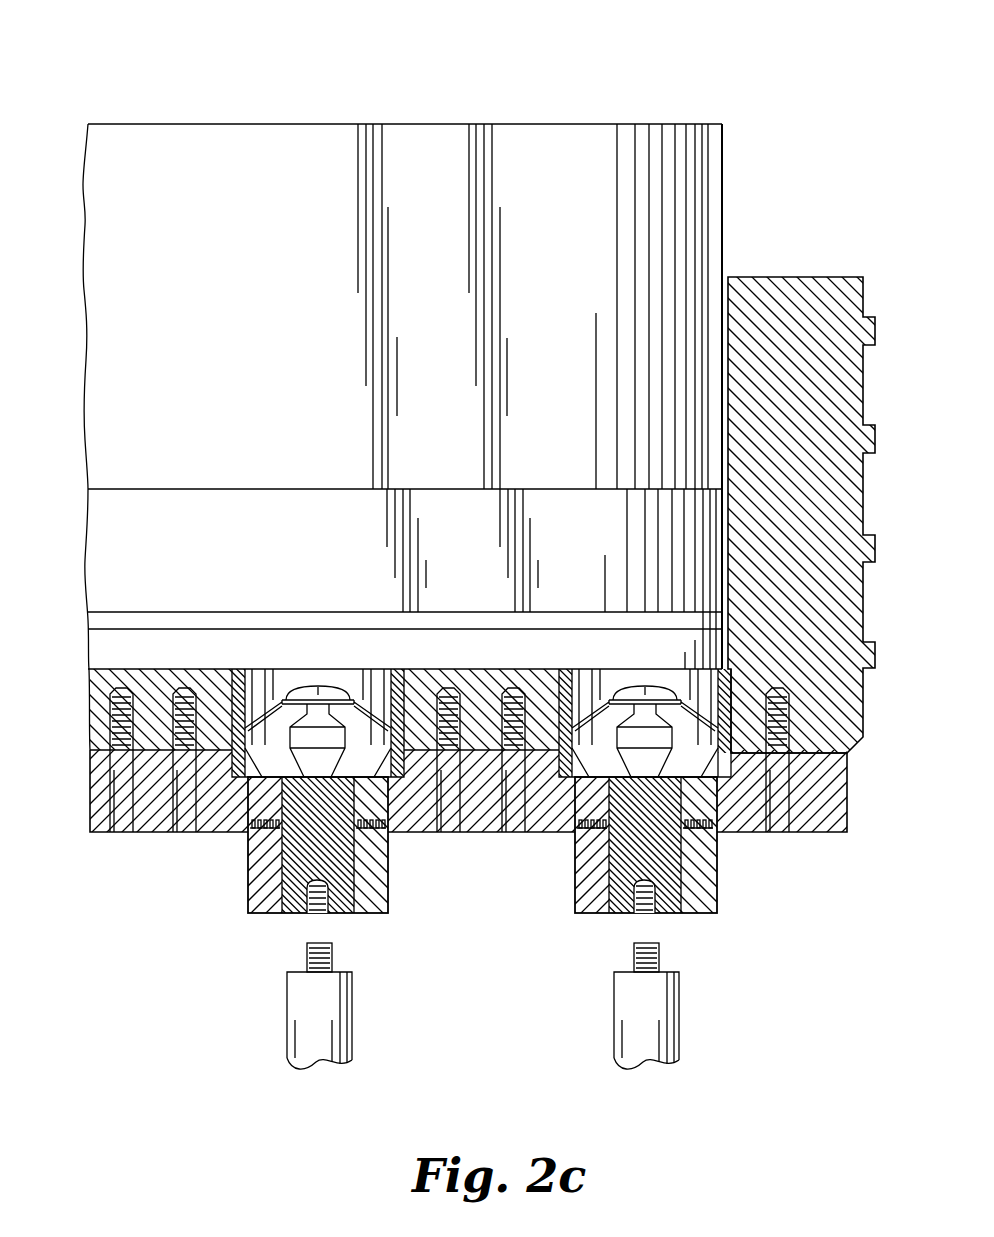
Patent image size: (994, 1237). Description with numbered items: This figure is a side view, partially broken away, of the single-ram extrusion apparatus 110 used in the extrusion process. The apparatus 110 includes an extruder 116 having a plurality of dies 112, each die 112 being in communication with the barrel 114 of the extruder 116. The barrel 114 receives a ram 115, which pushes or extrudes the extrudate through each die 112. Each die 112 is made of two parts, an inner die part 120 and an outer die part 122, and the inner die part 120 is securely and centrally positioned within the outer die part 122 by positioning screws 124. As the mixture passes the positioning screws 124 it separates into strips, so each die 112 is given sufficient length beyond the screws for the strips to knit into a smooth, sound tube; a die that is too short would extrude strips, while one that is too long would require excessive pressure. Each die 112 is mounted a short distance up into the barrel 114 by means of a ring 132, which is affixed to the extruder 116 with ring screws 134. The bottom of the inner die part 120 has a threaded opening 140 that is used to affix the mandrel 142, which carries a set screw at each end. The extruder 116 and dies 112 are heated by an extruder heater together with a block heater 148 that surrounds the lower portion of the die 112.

The single-ram extrusion apparatus 110 is at (182, 64).
The die 112 is at (238, 900).
The barrel 114 is at (108, 648).
The ram 115 is at (138, 315).
The extruder 116 is at (777, 277).
The inner die part 120 is at (246, 831).
The outer die part 122 is at (372, 898).
The positioning screws 124 is at (388, 830).
The ring 132 is at (857, 820).
The ring screws 134 is at (800, 832).
The threaded opening 140 is at (320, 913).
The mandrel 142 is at (333, 1002).
The block heater 148 is at (307, 950).